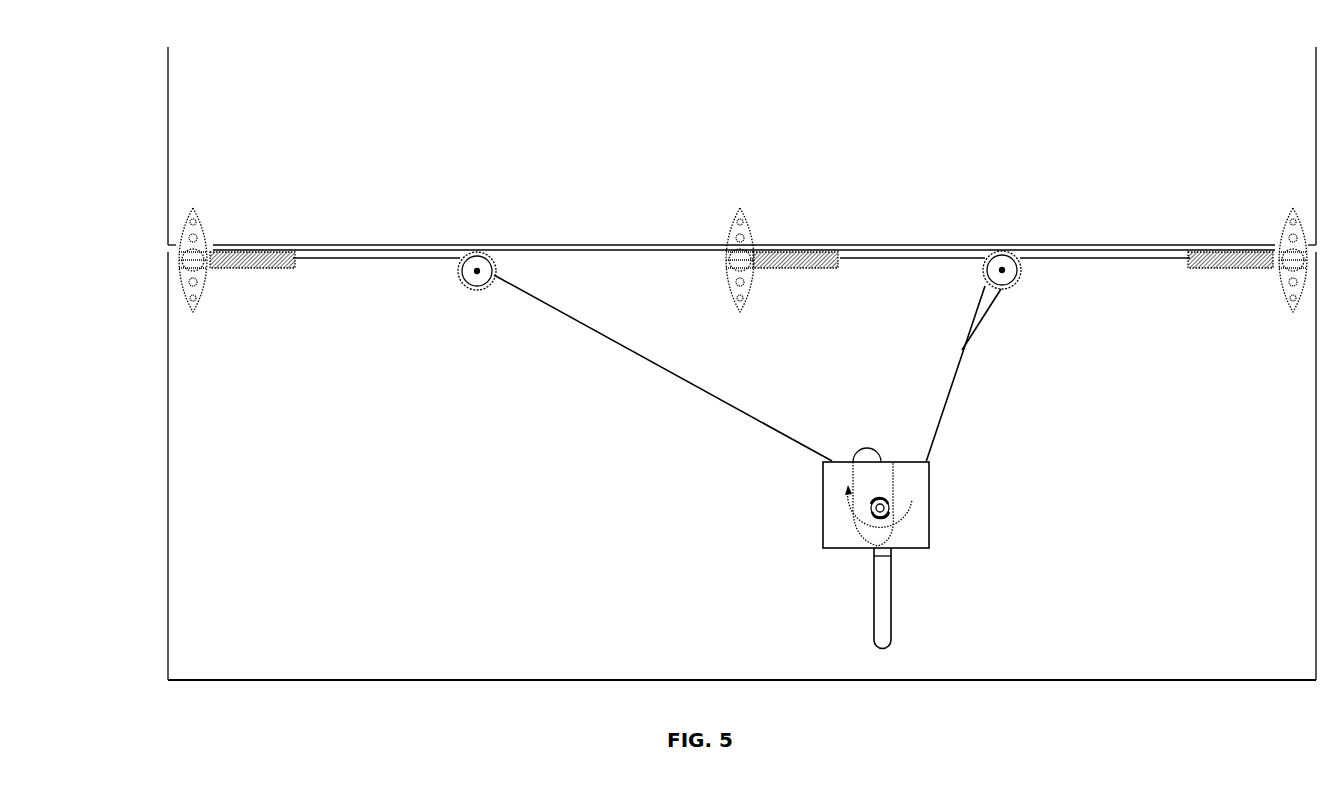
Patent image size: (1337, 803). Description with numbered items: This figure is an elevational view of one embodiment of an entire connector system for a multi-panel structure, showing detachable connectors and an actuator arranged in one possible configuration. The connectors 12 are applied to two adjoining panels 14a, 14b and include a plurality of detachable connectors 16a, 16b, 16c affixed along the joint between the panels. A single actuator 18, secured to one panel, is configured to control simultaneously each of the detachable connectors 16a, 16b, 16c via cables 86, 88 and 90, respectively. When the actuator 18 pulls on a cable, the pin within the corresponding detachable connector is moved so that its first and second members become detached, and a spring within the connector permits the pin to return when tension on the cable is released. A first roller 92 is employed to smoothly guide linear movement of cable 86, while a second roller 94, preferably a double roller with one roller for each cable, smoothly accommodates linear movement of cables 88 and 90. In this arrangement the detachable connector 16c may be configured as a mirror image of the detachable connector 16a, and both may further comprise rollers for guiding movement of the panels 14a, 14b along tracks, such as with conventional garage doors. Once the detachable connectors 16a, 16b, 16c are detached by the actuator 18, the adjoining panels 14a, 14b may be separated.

The connectors 12 is at (172, 222).
The panel 14a is at (579, 106).
The panel 14b is at (542, 481).
The detachable connector 16a is at (214, 241).
The detachable connector 16b is at (757, 241).
The detachable connector 16c is at (1272, 243).
The actuator 18 is at (936, 484).
The cable 86 is at (373, 262).
The cable 88 is at (919, 260).
The cable 90 is at (1131, 262).
The first roller 92 is at (466, 288).
The second roller 94 is at (1020, 281).